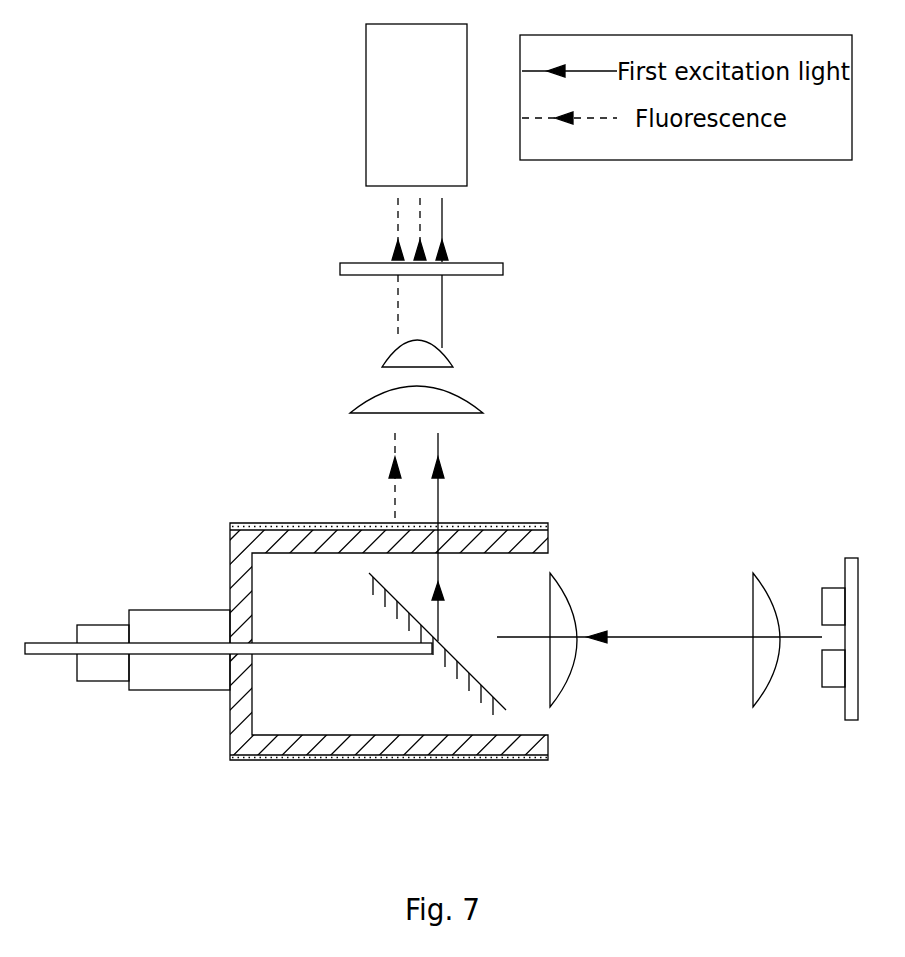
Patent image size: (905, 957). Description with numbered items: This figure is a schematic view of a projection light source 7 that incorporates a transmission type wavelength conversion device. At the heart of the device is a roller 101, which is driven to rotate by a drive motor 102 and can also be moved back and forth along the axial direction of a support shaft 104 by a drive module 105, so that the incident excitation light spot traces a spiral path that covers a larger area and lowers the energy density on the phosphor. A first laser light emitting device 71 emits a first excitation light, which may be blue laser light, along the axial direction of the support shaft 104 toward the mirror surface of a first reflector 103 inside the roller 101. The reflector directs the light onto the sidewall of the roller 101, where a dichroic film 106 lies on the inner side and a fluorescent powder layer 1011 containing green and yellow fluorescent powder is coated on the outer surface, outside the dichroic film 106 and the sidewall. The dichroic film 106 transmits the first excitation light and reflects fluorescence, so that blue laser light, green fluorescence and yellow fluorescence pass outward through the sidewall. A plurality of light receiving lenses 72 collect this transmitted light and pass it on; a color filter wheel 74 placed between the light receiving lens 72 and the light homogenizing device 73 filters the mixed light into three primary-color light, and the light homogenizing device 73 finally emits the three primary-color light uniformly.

The projection light source 7 is at (88, 70).
The first laser light emitting device 71 is at (845, 558).
The light receiving lens 72 is at (365, 402).
The light homogenizing device 73 is at (366, 103).
The color filter wheel 74 is at (350, 263).
The roller 101 is at (240, 698).
The fluorescent powder layer 1011 is at (262, 525).
The drive motor 102 is at (187, 610).
The first reflector 103 is at (448, 673).
The support shaft 104 is at (278, 642).
The drive module 105 is at (107, 623).
The dichroic film 106 is at (337, 550).